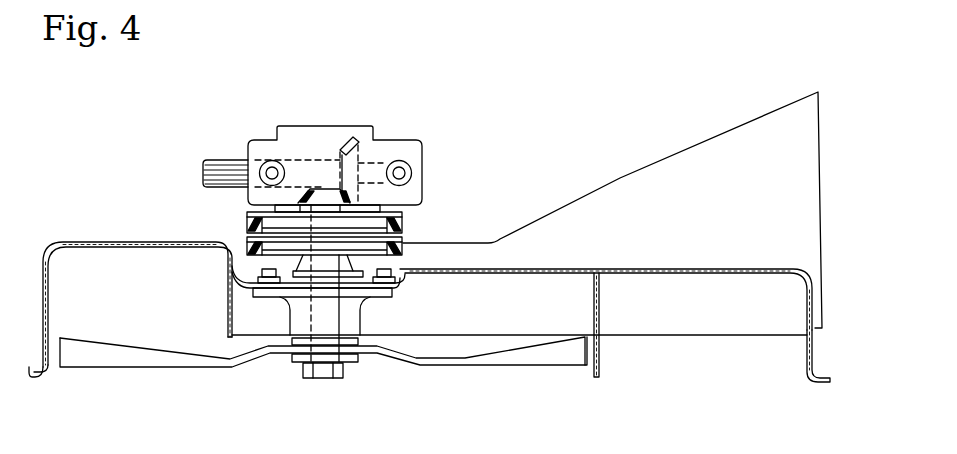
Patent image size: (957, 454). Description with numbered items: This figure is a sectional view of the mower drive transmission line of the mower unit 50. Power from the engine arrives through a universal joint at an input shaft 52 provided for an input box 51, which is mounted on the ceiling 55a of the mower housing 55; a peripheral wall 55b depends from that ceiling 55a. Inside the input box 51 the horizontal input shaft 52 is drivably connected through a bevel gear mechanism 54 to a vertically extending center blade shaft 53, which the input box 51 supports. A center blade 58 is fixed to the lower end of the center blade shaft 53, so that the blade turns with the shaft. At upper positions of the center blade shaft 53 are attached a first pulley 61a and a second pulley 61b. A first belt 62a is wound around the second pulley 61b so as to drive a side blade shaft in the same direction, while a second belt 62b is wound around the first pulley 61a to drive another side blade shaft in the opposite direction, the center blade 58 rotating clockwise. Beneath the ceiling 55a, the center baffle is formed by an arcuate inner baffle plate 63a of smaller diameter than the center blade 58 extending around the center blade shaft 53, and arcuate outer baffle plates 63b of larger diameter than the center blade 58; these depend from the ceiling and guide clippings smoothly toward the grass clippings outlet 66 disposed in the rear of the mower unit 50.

The mower unit 50 is at (545, 176).
The input box 51 is at (383, 150).
The input shaft 52 is at (224, 161).
The center blade shaft 53 is at (340, 313).
The bevel gear mechanism 54 is at (326, 145).
The mower housing 55 is at (615, 298).
The ceiling 55a is at (633, 268).
The peripheral wall 55b is at (806, 347).
The center blade 58 is at (545, 364).
The first pulley 61a is at (403, 212).
The second pulley 61b is at (403, 262).
The first belt 62a is at (245, 243).
The second belt 62b is at (245, 222).
The inner baffle plate 63a is at (227, 307).
The outer baffle plates 63b is at (600, 305).
The grass clippings outlet 66 is at (702, 136).